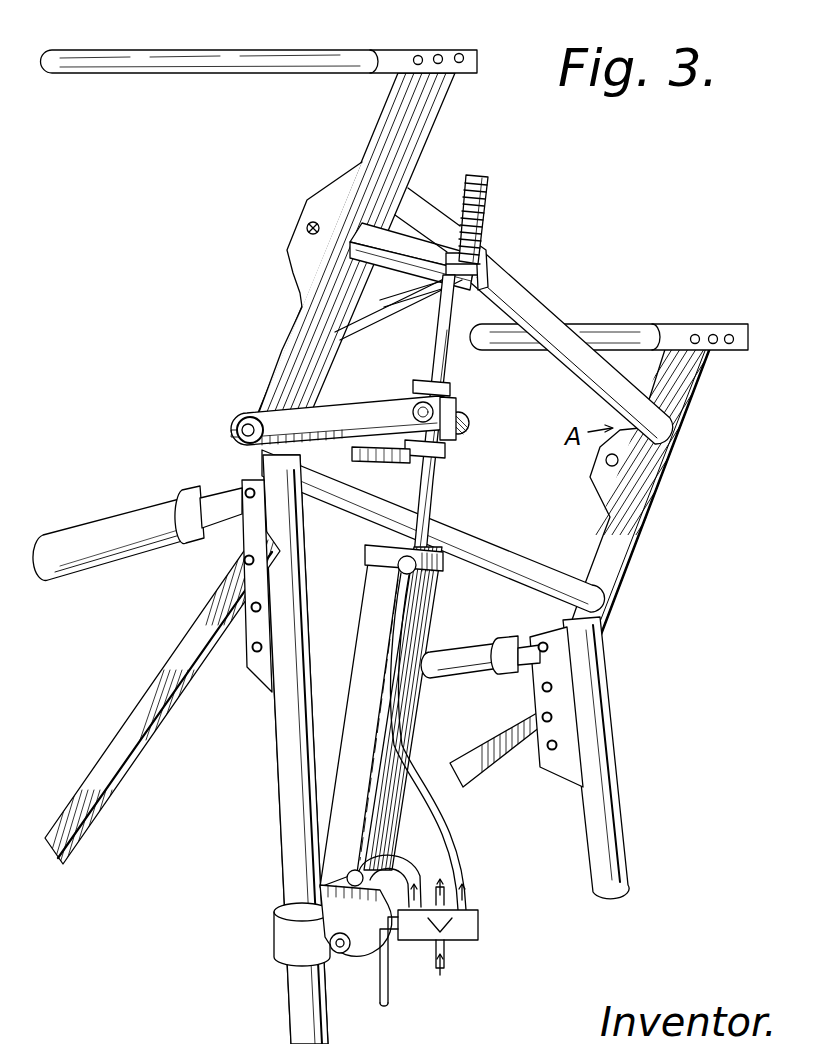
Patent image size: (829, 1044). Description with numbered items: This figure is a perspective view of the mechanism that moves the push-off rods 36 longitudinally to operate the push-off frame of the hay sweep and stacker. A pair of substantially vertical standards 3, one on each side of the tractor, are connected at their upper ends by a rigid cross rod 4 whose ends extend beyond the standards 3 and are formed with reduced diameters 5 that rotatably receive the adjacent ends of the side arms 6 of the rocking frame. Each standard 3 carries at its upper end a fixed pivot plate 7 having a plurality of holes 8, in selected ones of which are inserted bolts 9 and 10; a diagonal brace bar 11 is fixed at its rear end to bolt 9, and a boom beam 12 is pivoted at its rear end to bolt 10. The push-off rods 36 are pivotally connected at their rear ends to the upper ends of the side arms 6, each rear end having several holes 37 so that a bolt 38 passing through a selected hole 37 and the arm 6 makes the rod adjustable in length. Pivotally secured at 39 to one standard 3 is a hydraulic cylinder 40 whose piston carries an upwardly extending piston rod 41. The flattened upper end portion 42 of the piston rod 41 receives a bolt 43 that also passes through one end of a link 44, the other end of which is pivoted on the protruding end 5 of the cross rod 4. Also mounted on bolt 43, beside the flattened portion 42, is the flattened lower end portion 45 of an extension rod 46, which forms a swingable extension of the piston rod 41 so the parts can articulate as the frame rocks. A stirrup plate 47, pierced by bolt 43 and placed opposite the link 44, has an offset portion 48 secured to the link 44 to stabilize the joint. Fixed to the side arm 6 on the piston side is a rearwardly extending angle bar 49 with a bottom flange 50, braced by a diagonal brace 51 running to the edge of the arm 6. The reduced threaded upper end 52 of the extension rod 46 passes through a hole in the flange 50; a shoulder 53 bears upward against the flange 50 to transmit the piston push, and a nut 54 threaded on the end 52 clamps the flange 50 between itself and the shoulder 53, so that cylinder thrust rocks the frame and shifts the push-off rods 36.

The standard 3 is at (620, 833).
The cross rod 4 is at (469, 547).
The reduced diameter 5 is at (237, 430).
The side arm 6 is at (300, 318).
The pivot plate 7 is at (252, 633).
The hole 8 is at (254, 655).
The bolt 9 is at (245, 562).
The bolt 10 is at (246, 490).
The diagonal brace bar 11 is at (150, 725).
The boom beam 12 is at (160, 506).
The push-off rod 36 is at (218, 75).
The hole 37 is at (443, 56).
The bolt 38 is at (416, 56).
The pivotal securement 39 is at (340, 953).
The hydraulic cylinder 40 is at (362, 636).
The piston rod 41 is at (435, 483).
The flattened upper end portion 42 is at (447, 450).
The bolt 43 is at (416, 405).
The link 44 is at (340, 412).
The flattened lower end portion 45 is at (442, 390).
The extension rod 46 is at (440, 325).
The stirrup plate 47 is at (466, 419).
The offset portion 48 is at (362, 465).
The angle bar 49 is at (388, 240).
The bottom flange 50 is at (356, 258).
The diagonal brace 51 is at (362, 302).
The reduced threaded upper end 52 is at (489, 195).
The shoulder 53 is at (440, 280).
The nut 54 is at (485, 262).